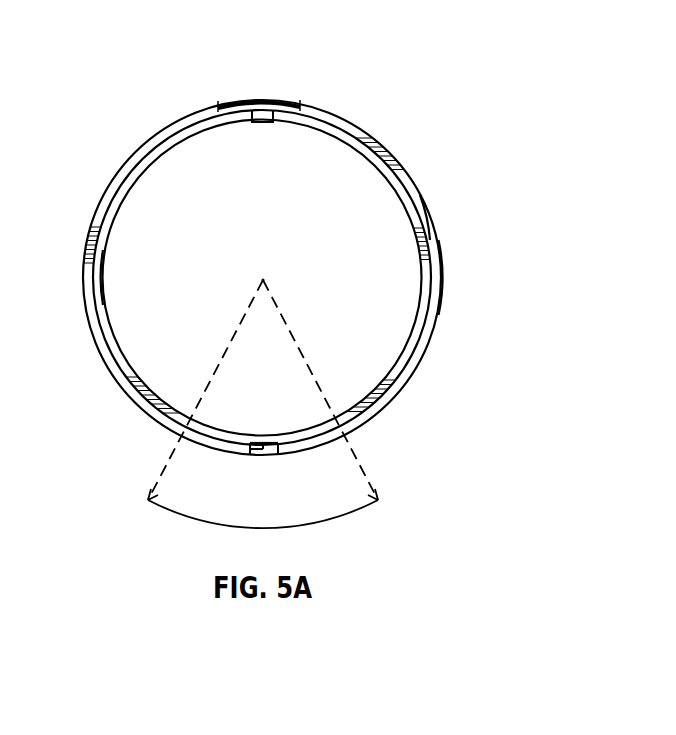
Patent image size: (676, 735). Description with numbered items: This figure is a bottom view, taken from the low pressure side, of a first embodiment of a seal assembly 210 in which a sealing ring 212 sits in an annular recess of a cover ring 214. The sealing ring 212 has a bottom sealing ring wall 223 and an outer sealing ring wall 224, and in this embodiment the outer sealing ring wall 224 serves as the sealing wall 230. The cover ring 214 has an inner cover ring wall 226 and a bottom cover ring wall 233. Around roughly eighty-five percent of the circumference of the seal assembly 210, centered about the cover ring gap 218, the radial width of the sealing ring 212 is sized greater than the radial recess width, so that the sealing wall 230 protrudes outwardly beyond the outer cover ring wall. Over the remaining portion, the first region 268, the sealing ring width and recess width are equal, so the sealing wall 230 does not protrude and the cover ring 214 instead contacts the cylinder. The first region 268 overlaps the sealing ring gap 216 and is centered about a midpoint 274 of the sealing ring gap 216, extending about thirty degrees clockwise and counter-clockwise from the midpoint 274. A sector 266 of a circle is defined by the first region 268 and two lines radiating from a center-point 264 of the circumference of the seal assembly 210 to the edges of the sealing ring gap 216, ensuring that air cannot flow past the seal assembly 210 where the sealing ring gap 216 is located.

The seal assembly 210 is at (120, 34).
The sealing ring 212 is at (305, 103).
The cover ring 214 is at (408, 347).
The sealing ring gap 216 is at (266, 455).
The cover ring gap 218 is at (262, 121).
The bottom sealing ring wall 223 is at (430, 218).
The outer sealing ring wall 224 is at (442, 277).
The inner cover ring wall 226 is at (107, 268).
The sealing wall 230 is at (442, 318).
The bottom cover ring wall 233 is at (422, 290).
The center-point 264 is at (263, 280).
The sector 266 is at (227, 350).
The first region 268 is at (308, 527).
The midpoint 274 is at (268, 443).